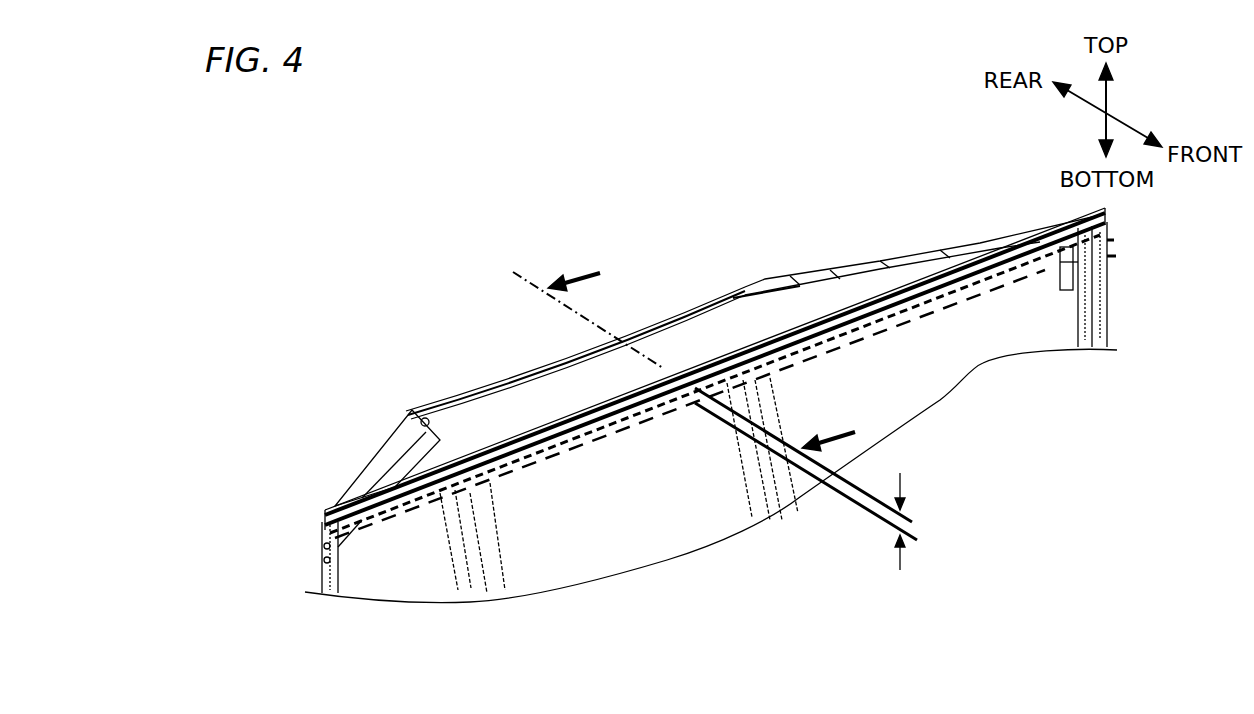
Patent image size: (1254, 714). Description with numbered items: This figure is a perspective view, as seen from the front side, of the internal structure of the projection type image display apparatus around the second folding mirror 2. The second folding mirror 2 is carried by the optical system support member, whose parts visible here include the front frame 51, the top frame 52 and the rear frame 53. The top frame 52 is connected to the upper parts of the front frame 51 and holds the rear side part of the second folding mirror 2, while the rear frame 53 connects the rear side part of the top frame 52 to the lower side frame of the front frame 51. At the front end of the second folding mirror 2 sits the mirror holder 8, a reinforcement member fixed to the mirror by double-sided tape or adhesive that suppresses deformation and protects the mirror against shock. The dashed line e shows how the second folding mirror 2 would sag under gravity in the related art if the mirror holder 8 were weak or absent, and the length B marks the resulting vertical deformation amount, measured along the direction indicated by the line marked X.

The second folding mirror 2 is at (527, 400).
The mirror holder 8 is at (1022, 233).
The front frame 51 is at (1100, 280).
The top frame 52 is at (740, 292).
The rear frame 53 is at (465, 590).
The dashed line e is at (877, 334).
The section line X is at (715, 393).
The length B is at (914, 521).